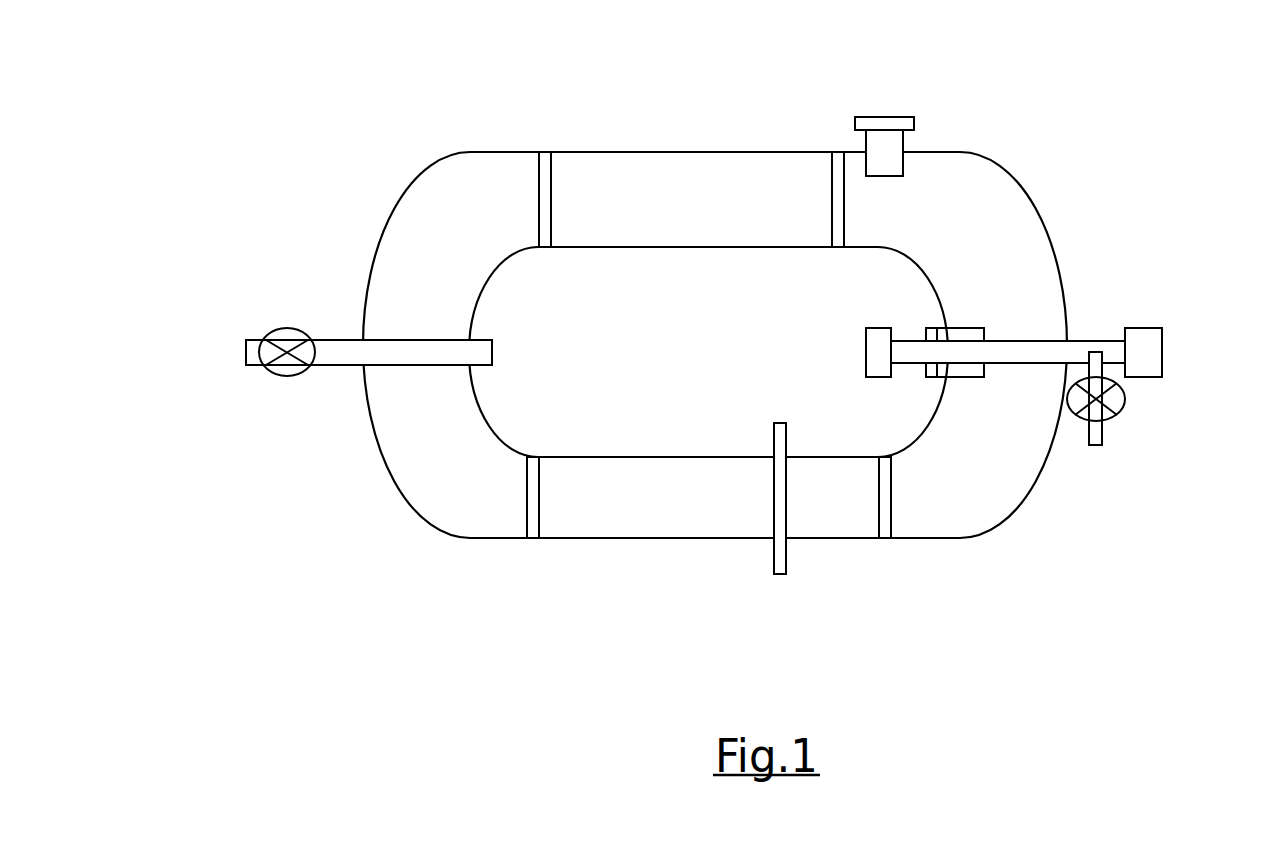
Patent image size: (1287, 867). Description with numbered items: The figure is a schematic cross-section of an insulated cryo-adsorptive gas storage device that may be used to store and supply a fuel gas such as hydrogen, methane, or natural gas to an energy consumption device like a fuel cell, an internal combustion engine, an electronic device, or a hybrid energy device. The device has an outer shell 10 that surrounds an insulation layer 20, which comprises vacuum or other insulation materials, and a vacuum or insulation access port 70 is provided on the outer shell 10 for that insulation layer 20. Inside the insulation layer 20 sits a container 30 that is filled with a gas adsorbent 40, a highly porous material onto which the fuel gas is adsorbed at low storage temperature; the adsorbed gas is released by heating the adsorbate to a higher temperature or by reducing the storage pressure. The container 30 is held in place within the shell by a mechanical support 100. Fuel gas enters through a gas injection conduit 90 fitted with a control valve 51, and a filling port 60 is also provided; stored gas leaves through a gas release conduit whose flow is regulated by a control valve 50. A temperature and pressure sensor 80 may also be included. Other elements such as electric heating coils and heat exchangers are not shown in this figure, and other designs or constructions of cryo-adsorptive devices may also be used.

The outer shell 10 is at (509, 152).
The insulation layer 20 is at (658, 178).
The container 30 is at (770, 246).
The gas adsorbent 40 is at (590, 423).
The control valve 50 is at (1105, 422).
The control valve 51 is at (285, 376).
The filling port 60 is at (1162, 345).
The vacuum or insulation access port 70 is at (893, 117).
The temperature and pressure sensor 80 is at (786, 567).
The gas injection conduit 90 is at (246, 352).
The mechanical support 100 is at (891, 508).